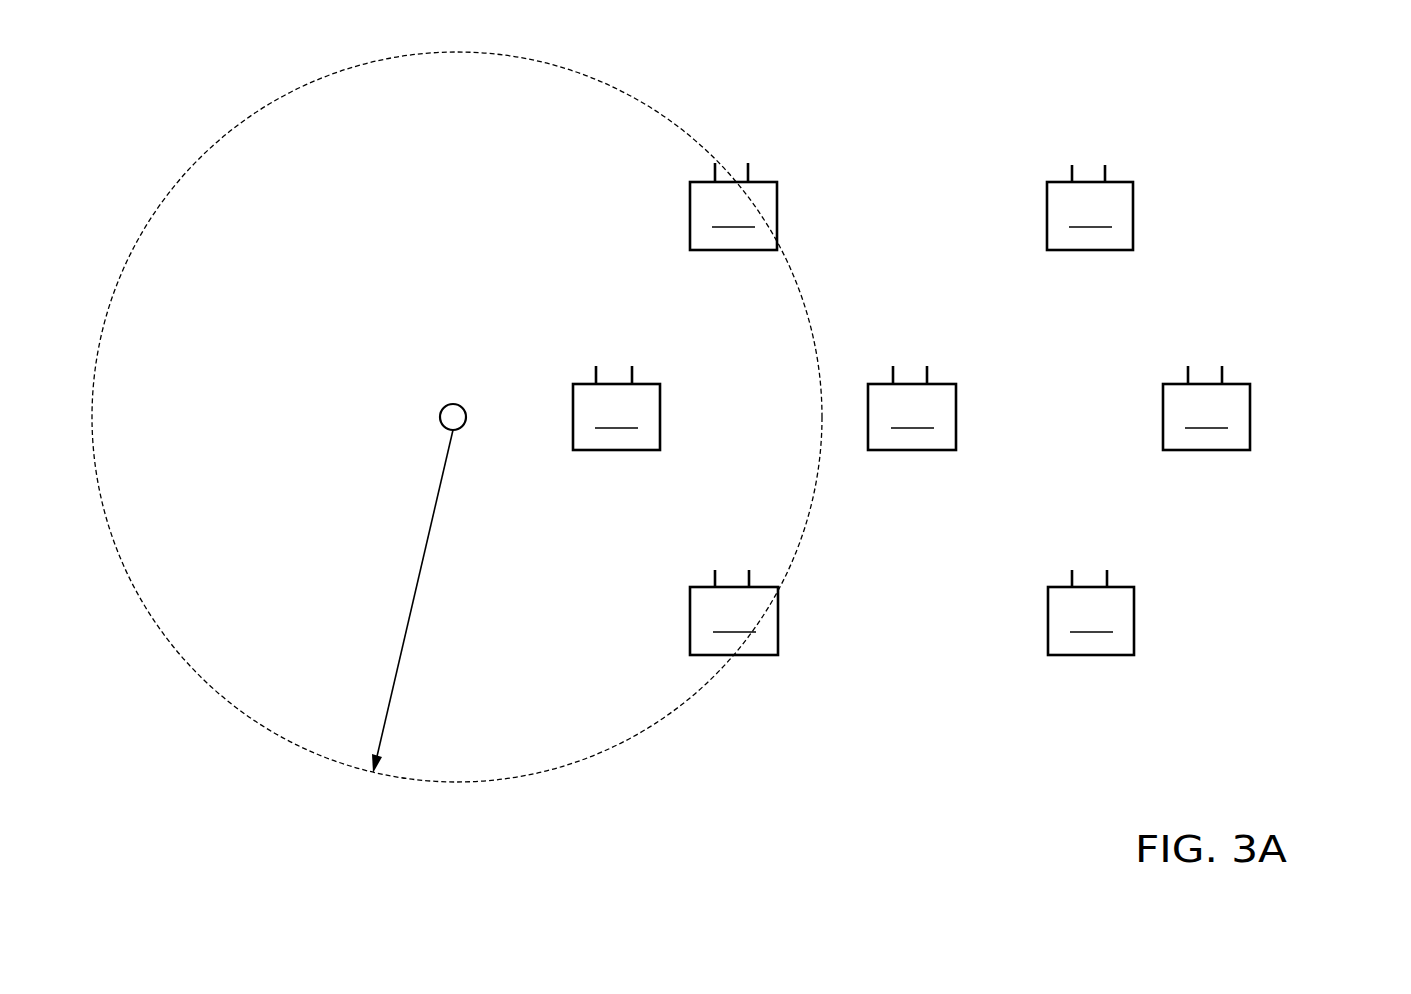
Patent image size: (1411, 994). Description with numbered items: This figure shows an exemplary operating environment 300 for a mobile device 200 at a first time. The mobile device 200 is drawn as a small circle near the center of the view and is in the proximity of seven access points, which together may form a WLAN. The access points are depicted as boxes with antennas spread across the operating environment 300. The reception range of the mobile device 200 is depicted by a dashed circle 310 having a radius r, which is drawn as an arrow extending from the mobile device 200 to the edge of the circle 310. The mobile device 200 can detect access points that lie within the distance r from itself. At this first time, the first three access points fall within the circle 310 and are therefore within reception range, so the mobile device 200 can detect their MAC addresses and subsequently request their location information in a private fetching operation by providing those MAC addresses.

The operating environment 300 is at (1282, 104).
The circle 310 is at (265, 103).
The mobile device 200 is at (449, 404).